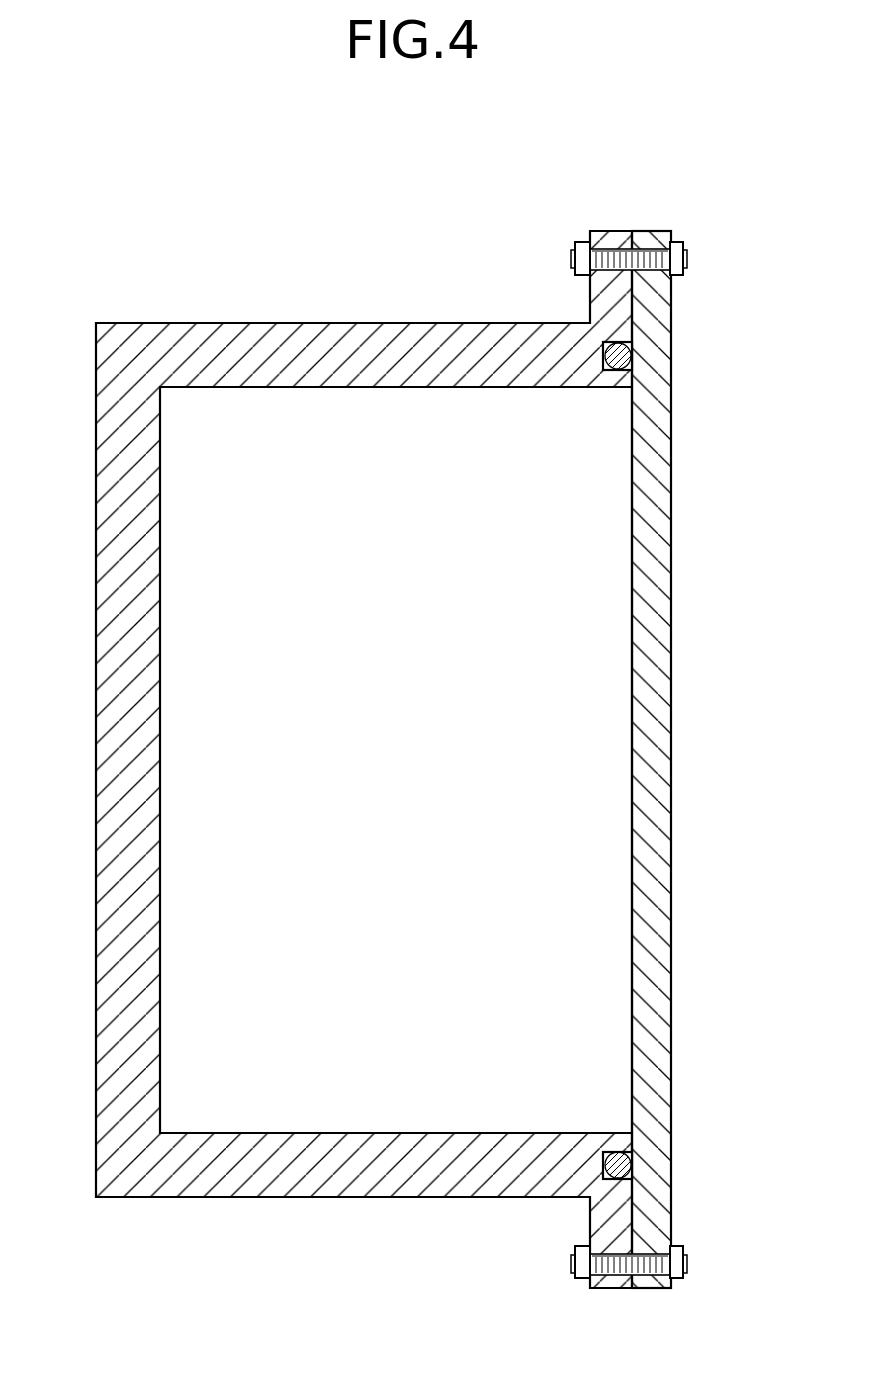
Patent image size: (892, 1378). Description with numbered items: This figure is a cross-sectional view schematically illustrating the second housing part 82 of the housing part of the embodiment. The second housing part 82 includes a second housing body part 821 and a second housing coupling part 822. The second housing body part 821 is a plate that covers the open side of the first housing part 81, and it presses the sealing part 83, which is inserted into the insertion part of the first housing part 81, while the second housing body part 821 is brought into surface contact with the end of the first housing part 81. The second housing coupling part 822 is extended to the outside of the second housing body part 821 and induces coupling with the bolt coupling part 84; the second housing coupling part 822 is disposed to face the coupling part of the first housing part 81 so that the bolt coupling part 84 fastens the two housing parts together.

The first housing part 81 is at (428, 1198).
The second housing part 82 is at (705, 759).
The second housing body part 821 is at (654, 1068).
The second housing coupling part 822 is at (663, 231).
The sealing part 83 is at (620, 1165).
The bolt coupling part 84 is at (685, 1258).